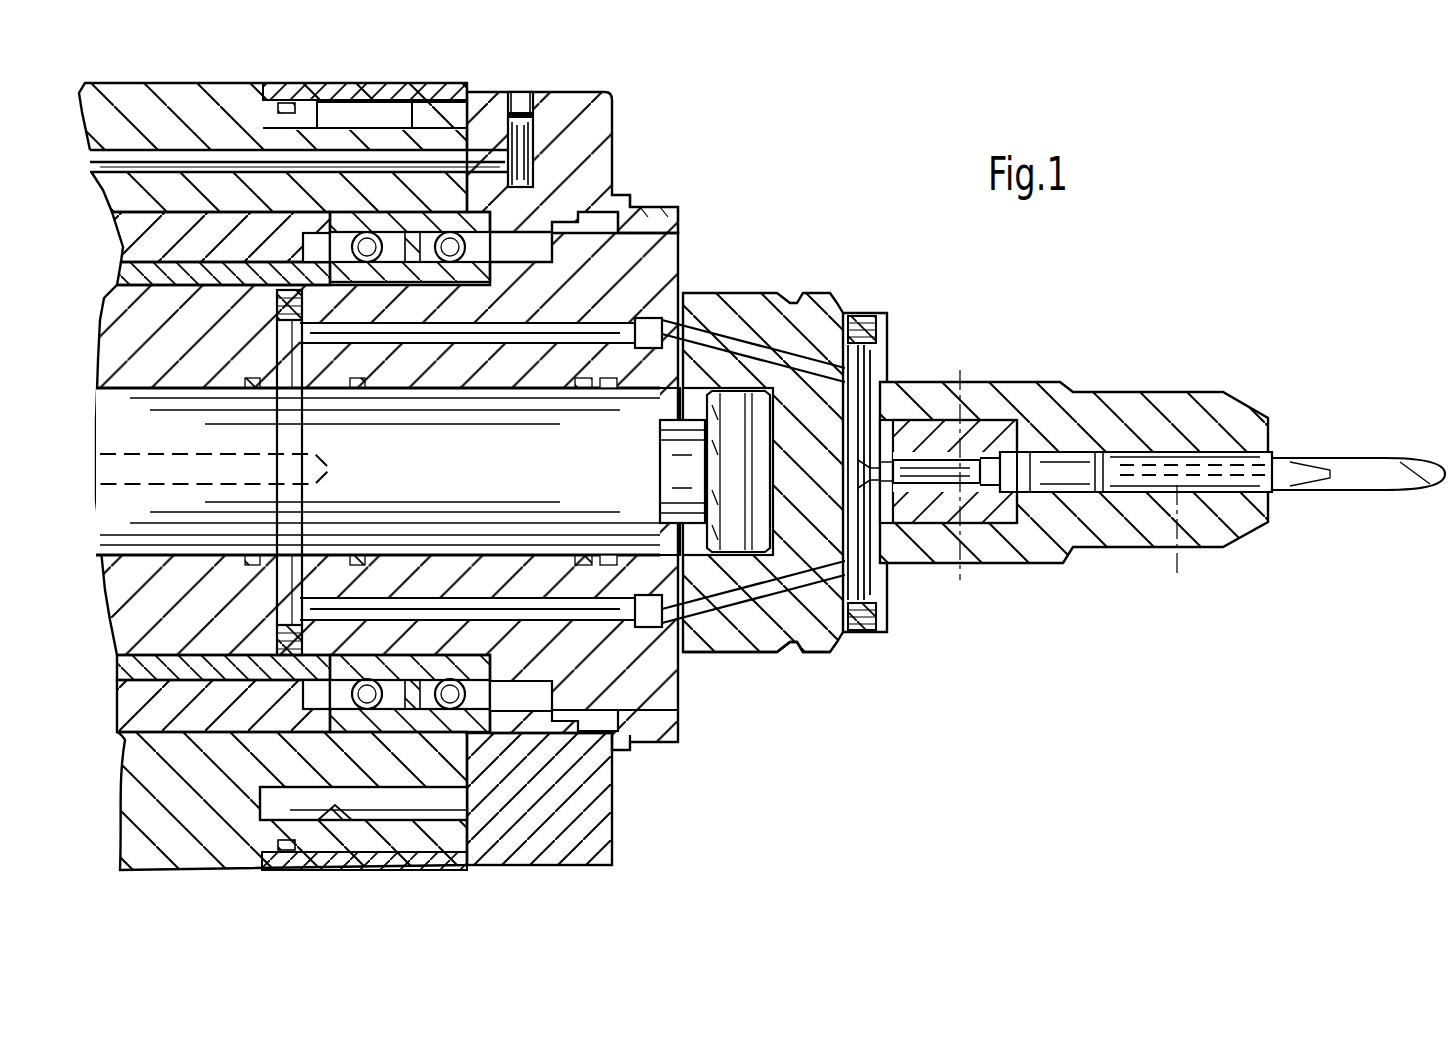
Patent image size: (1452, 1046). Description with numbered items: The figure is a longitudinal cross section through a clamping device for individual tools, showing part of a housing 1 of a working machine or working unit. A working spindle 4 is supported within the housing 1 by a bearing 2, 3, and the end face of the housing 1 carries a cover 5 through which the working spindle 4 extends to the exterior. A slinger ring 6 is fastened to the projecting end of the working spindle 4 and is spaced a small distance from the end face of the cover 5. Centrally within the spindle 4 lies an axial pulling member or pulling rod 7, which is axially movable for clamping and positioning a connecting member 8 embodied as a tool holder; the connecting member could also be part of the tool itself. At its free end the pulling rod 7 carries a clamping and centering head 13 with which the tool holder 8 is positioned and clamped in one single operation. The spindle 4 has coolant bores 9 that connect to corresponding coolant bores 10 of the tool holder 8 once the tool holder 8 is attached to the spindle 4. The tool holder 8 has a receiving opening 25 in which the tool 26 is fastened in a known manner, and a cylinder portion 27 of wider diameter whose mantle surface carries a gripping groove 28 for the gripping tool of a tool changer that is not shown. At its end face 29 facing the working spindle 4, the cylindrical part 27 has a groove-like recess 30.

The housing 1 is at (453, 132).
The bearing 2 is at (398, 218).
The bearing 3 is at (435, 245).
The working spindle 4 is at (527, 303).
The cover 5 is at (570, 110).
The slinger ring 6 is at (678, 208).
The pulling rod 7 is at (487, 446).
The connecting member 8 is at (822, 330).
The coolant bores 9 is at (300, 331).
The coolant bores 10 is at (855, 395).
The clamping and centering head 13 is at (743, 560).
The receiving opening 25 is at (1005, 410).
The tool 26 is at (1270, 452).
The cylinder portion 27 is at (800, 313).
The gripping groove 28 is at (783, 647).
The end face 29 is at (700, 657).
The groove-like recess 30 is at (862, 612).